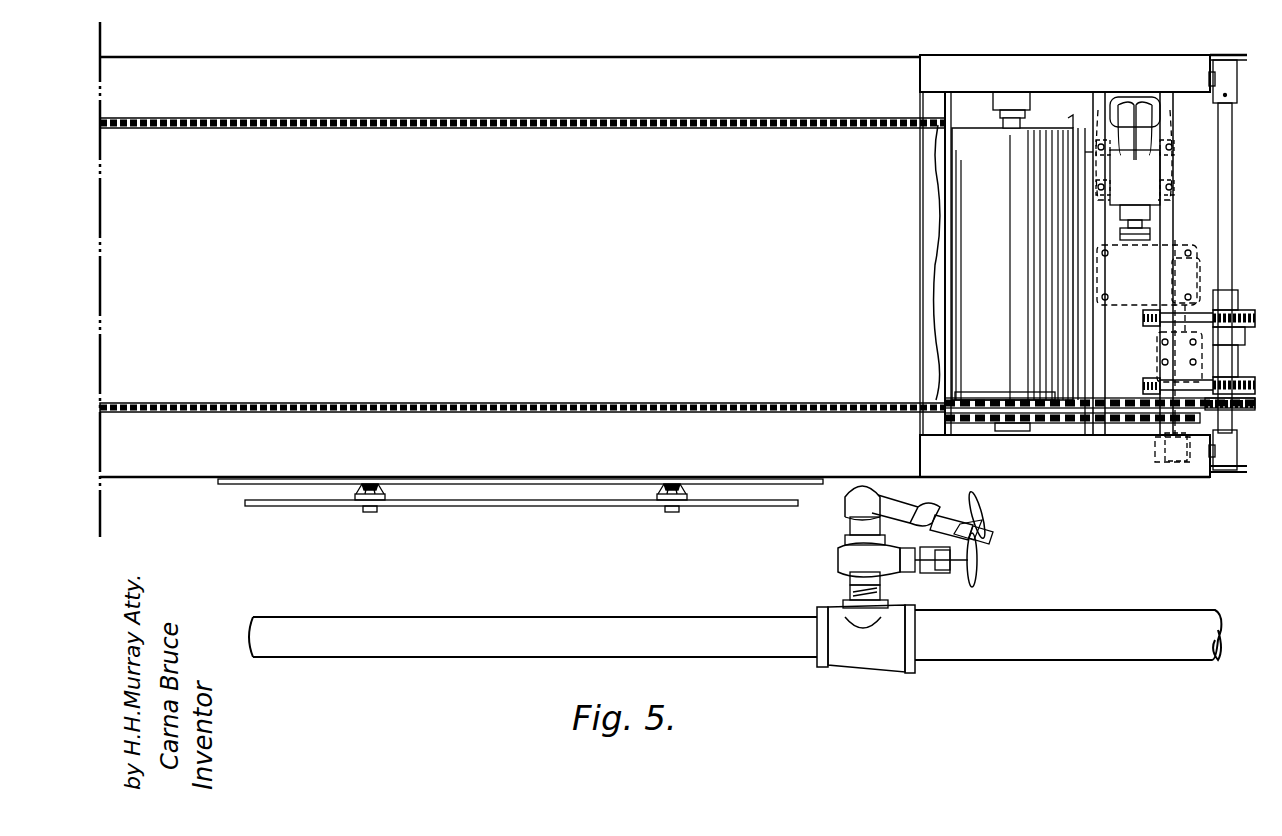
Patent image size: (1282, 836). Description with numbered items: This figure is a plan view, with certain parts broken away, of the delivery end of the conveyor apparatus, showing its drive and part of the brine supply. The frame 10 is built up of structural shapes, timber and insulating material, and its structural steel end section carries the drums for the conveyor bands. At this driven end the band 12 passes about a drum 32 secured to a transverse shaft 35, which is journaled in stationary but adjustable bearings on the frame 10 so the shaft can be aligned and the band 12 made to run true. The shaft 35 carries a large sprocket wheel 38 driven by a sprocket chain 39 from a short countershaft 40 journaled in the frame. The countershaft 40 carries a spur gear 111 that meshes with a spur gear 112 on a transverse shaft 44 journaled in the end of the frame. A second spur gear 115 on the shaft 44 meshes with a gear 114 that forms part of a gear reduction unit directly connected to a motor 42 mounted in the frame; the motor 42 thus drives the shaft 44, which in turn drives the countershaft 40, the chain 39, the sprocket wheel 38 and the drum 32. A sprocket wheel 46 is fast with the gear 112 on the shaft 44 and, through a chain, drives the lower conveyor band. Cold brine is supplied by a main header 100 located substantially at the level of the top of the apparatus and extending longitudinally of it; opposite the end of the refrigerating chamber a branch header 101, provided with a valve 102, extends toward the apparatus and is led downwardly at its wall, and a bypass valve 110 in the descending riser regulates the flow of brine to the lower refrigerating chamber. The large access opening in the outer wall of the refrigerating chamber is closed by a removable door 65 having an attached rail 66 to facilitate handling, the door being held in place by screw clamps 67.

The frame 10 is at (1070, 62).
The band 12 is at (543, 128).
The drum 32 is at (1000, 351).
The transverse shaft 35 is at (1005, 397).
The large sprocket wheel 38 is at (1055, 420).
The sprocket chain 39 is at (1135, 422).
The countershaft 40 is at (1172, 460).
The motor 42 is at (1145, 172).
The transverse shaft 44 is at (1232, 213).
The sprocket wheel 46 is at (1258, 412).
The door 65 is at (585, 483).
The rail 66 is at (478, 500).
The screw clamps 67 is at (362, 506).
The main header 100 is at (1040, 643).
The branch header 101 is at (867, 597).
The valve 102 is at (978, 563).
The bypass valve 110 is at (983, 512).
The spur gear 111 is at (1143, 386).
The spur gear 112 is at (1245, 382).
The gear 114 is at (1145, 320).
The second spur gear 115 is at (1243, 313).